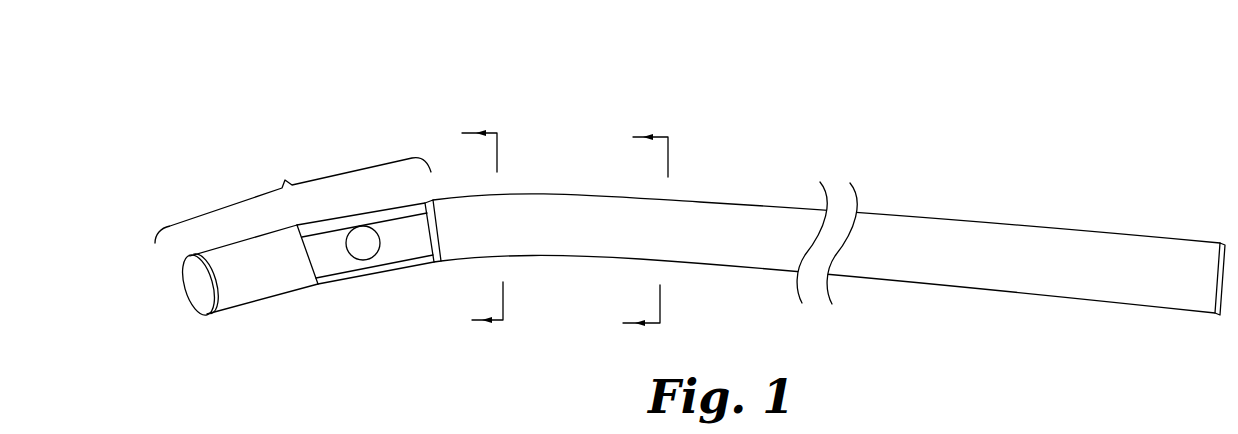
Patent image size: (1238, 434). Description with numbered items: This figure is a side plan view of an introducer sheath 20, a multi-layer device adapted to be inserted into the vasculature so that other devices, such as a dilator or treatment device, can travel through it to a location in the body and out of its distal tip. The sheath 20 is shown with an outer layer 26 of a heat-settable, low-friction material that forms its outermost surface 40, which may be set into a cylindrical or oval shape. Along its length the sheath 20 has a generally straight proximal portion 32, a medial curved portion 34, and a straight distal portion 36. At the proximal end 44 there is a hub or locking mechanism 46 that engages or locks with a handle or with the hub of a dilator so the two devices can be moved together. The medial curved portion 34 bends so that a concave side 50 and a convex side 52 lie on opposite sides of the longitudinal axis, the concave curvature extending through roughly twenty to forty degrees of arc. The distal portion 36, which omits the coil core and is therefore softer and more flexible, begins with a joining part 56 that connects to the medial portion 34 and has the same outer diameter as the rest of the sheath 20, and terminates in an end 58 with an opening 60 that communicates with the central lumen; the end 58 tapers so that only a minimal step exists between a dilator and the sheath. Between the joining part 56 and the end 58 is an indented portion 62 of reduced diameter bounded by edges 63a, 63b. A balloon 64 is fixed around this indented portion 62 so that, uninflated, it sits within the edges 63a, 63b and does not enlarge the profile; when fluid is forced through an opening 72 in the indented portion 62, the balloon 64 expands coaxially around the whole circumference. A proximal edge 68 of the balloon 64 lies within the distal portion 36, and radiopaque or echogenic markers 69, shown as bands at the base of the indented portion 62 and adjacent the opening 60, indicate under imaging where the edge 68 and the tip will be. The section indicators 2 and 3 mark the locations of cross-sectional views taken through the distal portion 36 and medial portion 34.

The introducer sheath 20 is at (750, 75).
The outer layer 26 is at (760, 257).
The proximal portion 32 is at (810, 195).
The medial curved portion 34 is at (608, 186).
The distal portion 36 is at (293, 195).
The outermost surface 40 is at (713, 202).
The proximal end 44 is at (1213, 238).
The hub or locking mechanism 46 is at (1215, 317).
The concave side 50 is at (567, 262).
The convex side 52 is at (553, 193).
The joining part 56 is at (452, 263).
The end 58 is at (215, 340).
The opening 60 is at (190, 288).
The indented portion 62 is at (378, 285).
The edge 63a is at (318, 285).
The edge 63b is at (434, 262).
The balloon 64 is at (398, 268).
The proximal edge of balloon 68 is at (407, 210).
The marker 69 is at (207, 323).
The opening 72 is at (360, 252).
The section line 2- 2 is at (489, 227).
The section line 3- 3 is at (651, 231).